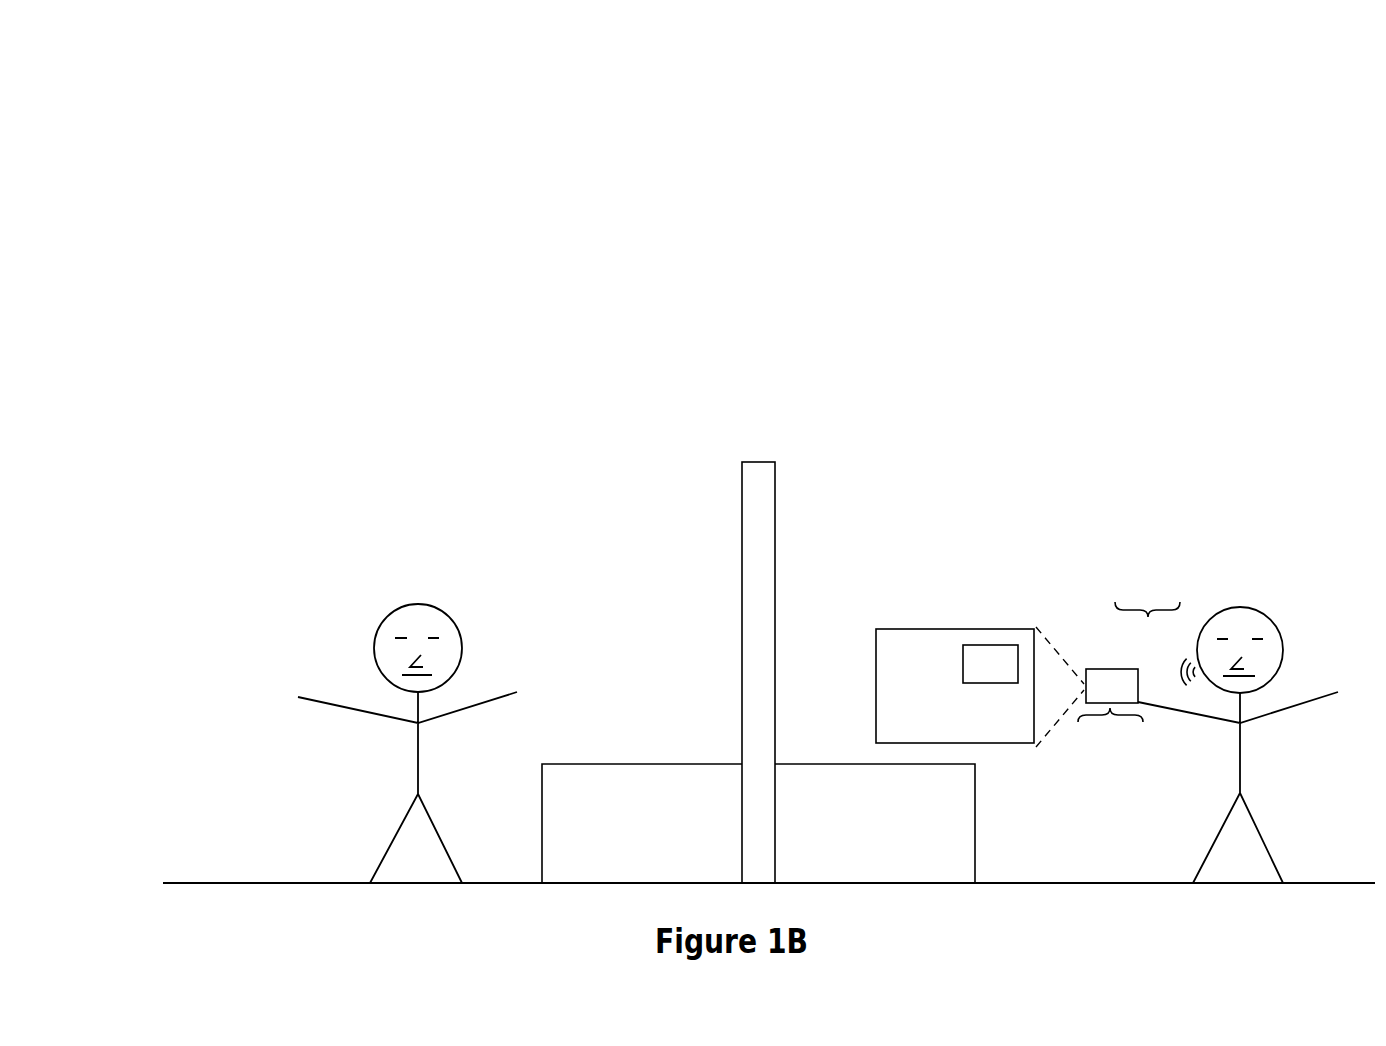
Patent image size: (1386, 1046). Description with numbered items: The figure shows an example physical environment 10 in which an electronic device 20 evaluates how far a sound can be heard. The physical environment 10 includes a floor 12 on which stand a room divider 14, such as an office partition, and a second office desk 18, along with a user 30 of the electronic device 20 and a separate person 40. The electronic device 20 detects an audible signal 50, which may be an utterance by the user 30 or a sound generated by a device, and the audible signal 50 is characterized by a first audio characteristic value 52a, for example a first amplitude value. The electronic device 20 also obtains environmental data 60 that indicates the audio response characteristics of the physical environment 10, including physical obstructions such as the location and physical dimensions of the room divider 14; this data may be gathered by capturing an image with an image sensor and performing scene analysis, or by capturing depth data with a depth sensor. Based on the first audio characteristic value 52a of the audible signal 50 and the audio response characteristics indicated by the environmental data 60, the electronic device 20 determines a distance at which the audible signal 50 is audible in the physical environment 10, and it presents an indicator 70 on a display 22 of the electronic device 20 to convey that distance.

The physical environment 10 is at (139, 72).
The floor 12 is at (187, 883).
The room divider 14 is at (757, 462).
The second office desk 18 is at (650, 764).
The electronic device 20 is at (1112, 686).
The display 22 is at (876, 689).
The user 30 is at (1204, 863).
The person 40 is at (380, 866).
The audible signal 50 is at (1182, 648).
The first audio characteristic value 52a is at (1147, 599).
The environmental data 60 is at (1110, 727).
The indicator 70 is at (990, 664).